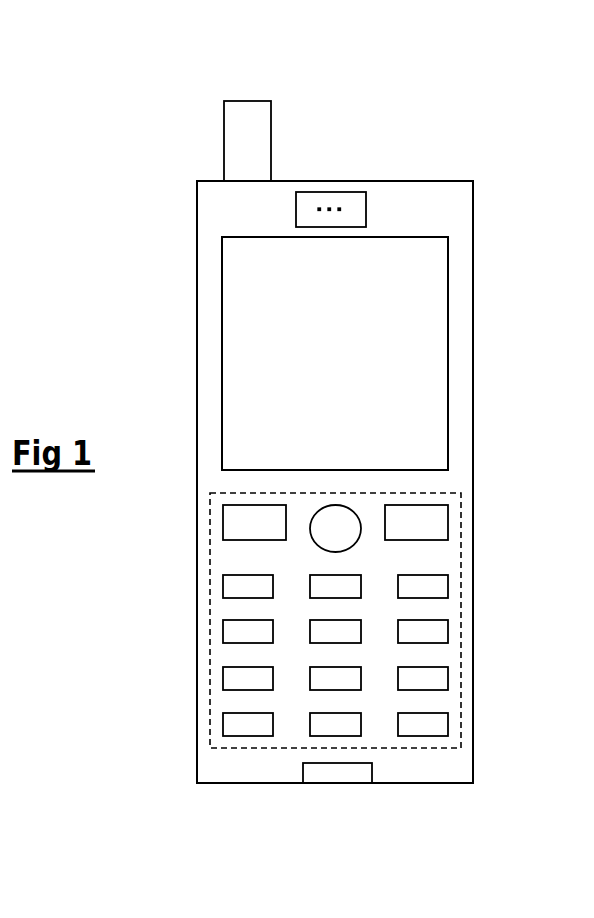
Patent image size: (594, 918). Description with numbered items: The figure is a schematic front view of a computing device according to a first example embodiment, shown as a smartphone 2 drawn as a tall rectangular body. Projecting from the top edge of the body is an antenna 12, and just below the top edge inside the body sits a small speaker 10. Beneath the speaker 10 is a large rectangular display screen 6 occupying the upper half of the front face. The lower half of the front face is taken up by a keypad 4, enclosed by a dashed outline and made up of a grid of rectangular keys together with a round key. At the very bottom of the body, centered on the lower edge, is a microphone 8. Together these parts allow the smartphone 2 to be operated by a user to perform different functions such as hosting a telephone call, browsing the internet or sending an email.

The smartphone 2 is at (478, 132).
The keypad 4 is at (461, 638).
The display screen 6 is at (449, 338).
The microphone 8 is at (325, 767).
The speaker 10 is at (340, 208).
The antenna 12 is at (238, 115).